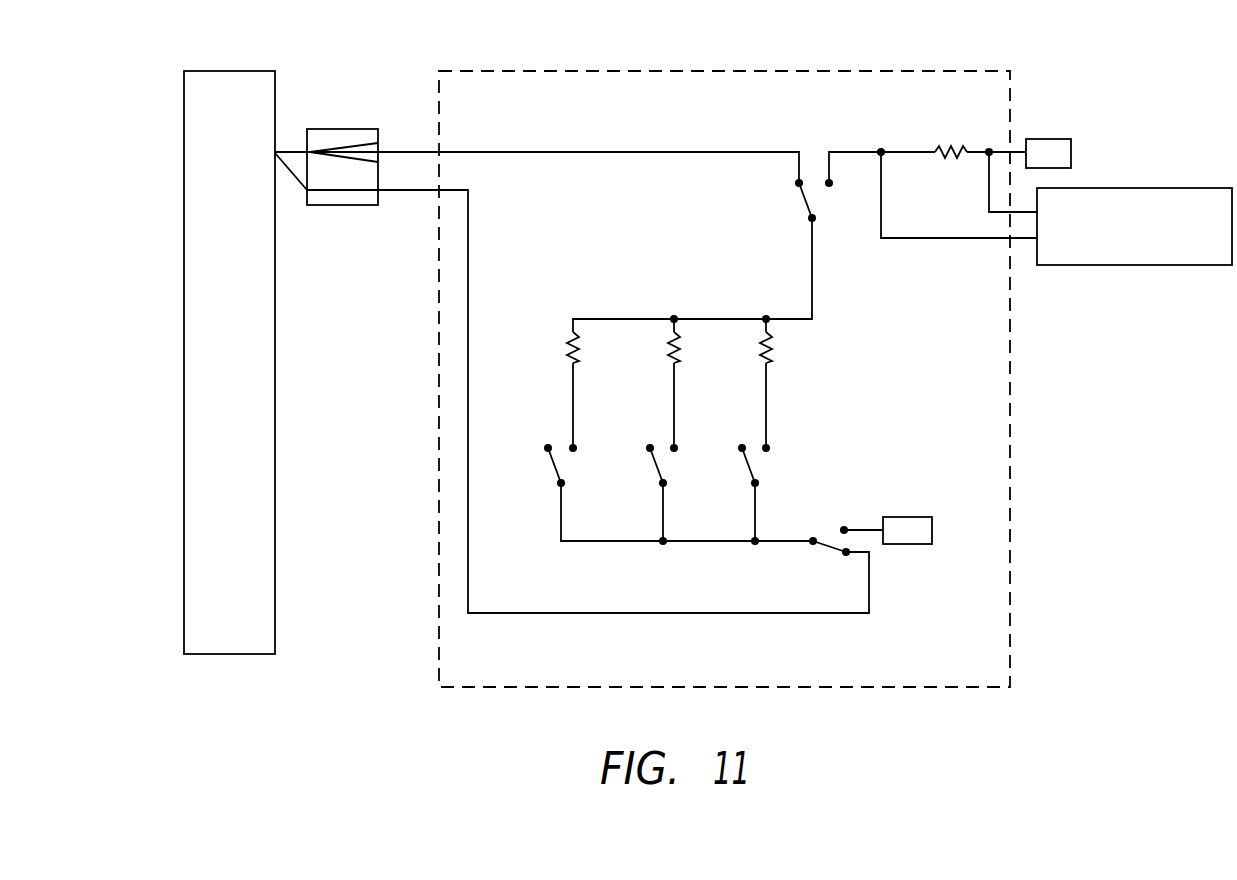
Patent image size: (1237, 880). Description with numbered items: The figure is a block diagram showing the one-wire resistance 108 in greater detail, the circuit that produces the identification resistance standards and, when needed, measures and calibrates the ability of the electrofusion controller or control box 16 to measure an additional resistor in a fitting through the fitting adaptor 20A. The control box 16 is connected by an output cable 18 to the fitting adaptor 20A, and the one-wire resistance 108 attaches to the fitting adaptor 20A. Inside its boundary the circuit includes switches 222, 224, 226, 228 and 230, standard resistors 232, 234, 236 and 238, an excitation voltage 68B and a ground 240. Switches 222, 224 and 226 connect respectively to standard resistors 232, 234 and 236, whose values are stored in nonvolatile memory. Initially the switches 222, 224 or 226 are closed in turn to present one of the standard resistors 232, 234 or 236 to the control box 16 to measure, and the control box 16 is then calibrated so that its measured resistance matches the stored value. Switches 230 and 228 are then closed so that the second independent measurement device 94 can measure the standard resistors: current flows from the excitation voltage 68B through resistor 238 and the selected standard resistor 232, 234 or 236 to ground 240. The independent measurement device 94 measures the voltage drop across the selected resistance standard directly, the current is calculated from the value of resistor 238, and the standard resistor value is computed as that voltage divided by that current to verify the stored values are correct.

The electrofusion controller 16 is at (249, 405).
The output cable 18 is at (288, 152).
The fitting adaptor 20A is at (325, 205).
The 1-wire resistance 108 is at (1003, 58).
The switch 230 is at (804, 200).
The resistor 238 is at (940, 148).
The excitation voltage 68B is at (1071, 150).
The second independent measurement device 94 is at (1120, 265).
The standard resistor 232 is at (578, 360).
The standard resistor 234 is at (679, 360).
The standard resistor 236 is at (771, 360).
The switch 222 is at (556, 468).
The switch 224 is at (658, 468).
The switch 226 is at (750, 468).
The switch 228 is at (828, 548).
The ground 240 is at (908, 517).